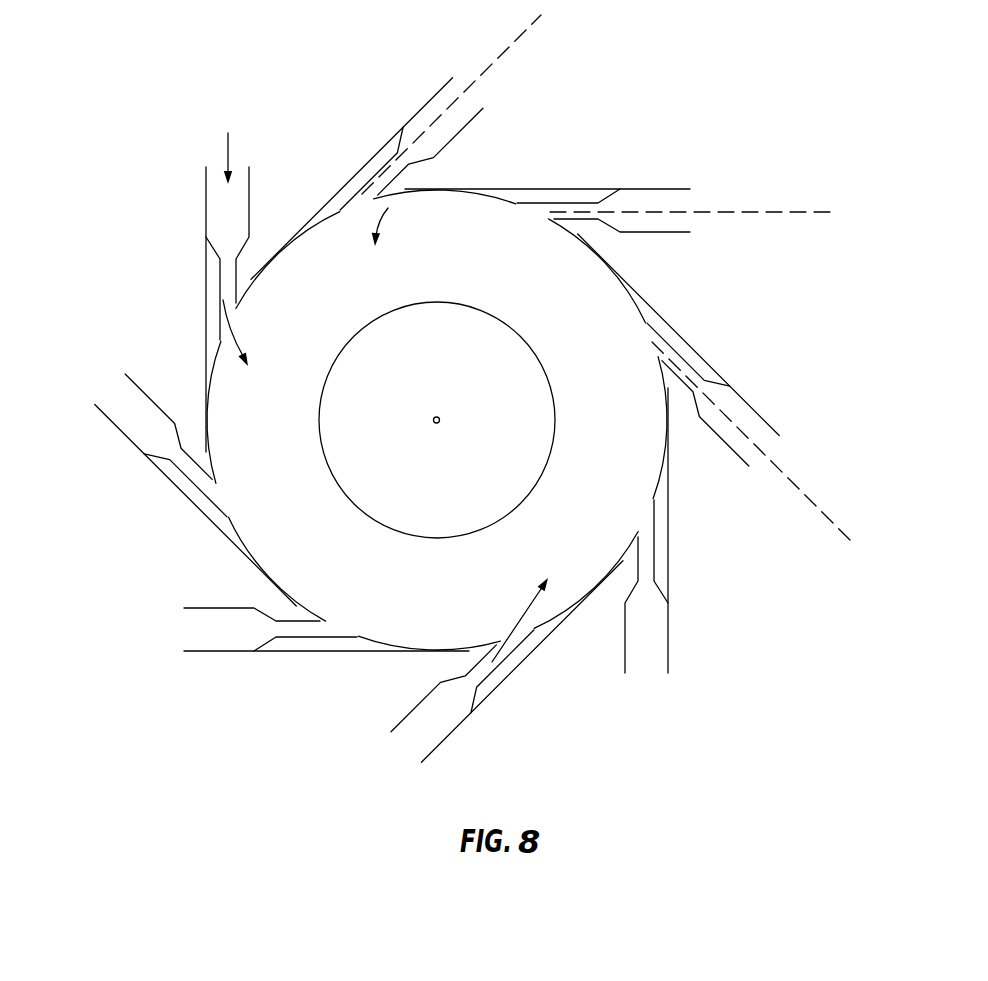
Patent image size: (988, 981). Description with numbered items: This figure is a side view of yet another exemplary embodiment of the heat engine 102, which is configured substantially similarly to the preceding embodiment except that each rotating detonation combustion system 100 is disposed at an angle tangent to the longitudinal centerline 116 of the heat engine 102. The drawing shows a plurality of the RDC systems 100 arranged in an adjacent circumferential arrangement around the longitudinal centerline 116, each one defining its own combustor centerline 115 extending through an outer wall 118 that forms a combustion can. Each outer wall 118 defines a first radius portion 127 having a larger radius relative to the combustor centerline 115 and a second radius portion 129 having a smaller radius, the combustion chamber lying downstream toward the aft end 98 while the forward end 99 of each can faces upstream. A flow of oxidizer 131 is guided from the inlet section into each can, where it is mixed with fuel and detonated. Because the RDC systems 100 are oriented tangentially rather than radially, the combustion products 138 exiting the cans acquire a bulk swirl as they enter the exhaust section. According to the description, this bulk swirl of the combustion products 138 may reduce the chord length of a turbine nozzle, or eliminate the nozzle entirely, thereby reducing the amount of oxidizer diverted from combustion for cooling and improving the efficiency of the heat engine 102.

The heat engine 102 is at (752, 50).
The combustor centerline 115 is at (524, 33).
The longitudinal centerline 116 is at (443, 419).
The outer wall 118 is at (653, 189).
The aft end 98 is at (547, 242).
The forward end 99 is at (545, 78).
The rotating detonation combustion system 100 is at (678, 640).
The first radius portion 127 is at (267, 206).
The second radius portion 129 is at (220, 274).
The flow of oxidizer 131 is at (230, 150).
The combustion products 138 is at (388, 208).